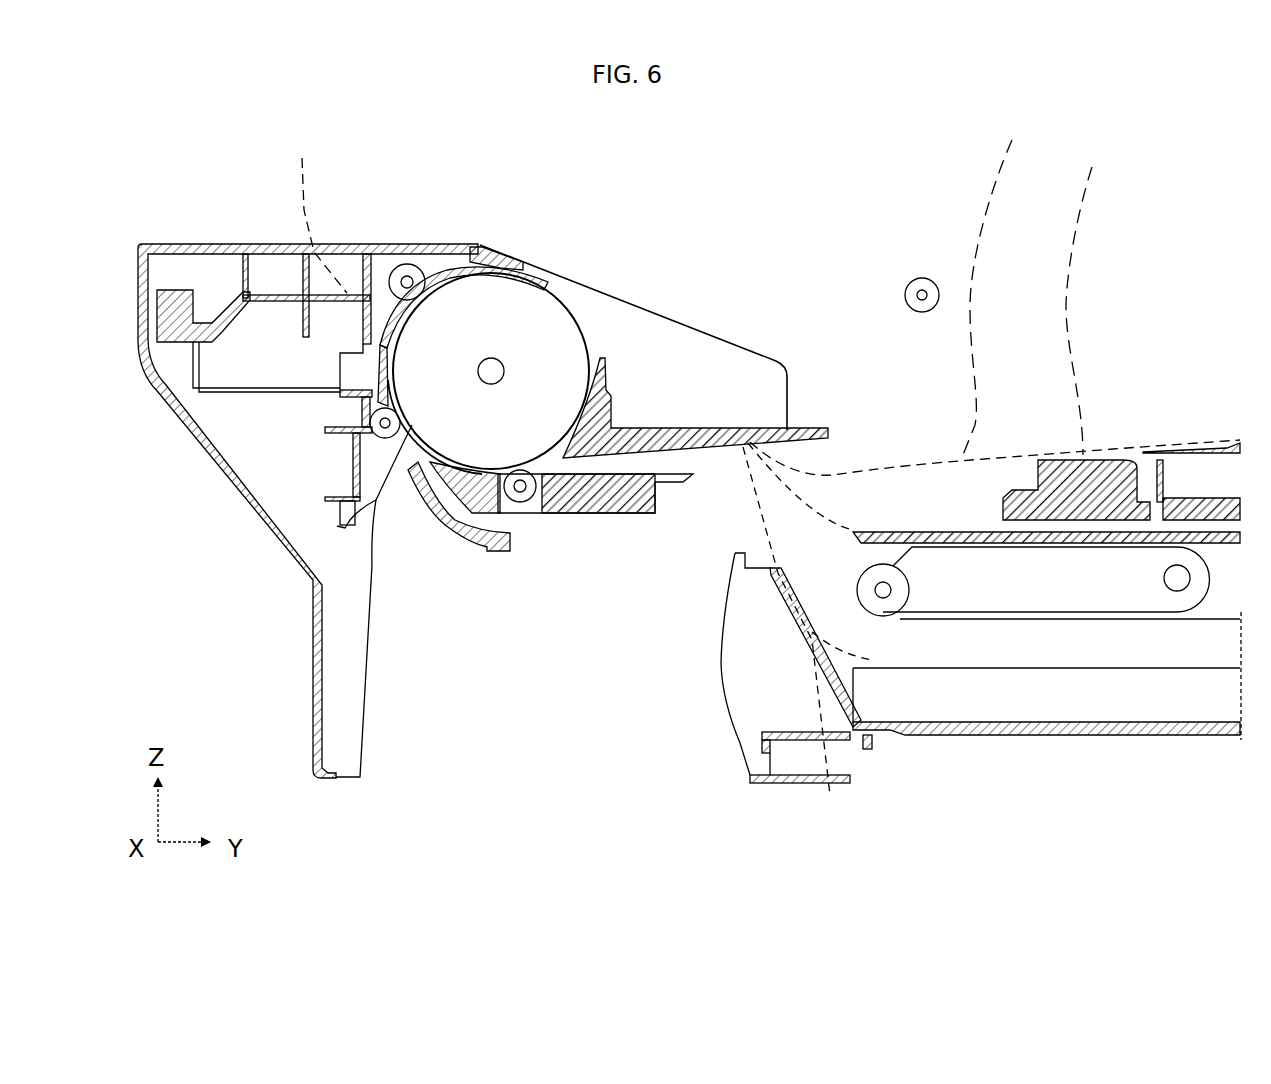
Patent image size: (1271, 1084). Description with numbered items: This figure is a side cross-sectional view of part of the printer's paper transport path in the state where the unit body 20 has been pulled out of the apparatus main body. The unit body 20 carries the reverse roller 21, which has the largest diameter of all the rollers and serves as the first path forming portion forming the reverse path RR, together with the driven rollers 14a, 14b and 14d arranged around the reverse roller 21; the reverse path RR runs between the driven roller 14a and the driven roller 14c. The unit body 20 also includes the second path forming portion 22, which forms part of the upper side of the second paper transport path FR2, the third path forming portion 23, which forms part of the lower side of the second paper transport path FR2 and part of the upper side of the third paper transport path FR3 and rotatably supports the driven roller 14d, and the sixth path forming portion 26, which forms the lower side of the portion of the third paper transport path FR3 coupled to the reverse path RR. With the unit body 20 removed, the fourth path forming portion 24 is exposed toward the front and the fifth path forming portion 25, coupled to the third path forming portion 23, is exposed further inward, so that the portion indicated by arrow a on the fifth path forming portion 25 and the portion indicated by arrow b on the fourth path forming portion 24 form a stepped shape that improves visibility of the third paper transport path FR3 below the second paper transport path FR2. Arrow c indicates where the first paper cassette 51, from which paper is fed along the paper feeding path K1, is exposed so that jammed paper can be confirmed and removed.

The unit body 20 is at (190, 240).
The reverse path RR is at (315, 210).
The driven roller 14b is at (394, 266).
The driven roller 14a is at (375, 437).
The driven roller 14d is at (513, 482).
The driven roller 14c is at (934, 283).
The reverse roller 21 is at (547, 290).
The second path forming portion 22 is at (688, 425).
The third path forming portion 23 is at (597, 513).
The sixth path forming portion 26 is at (440, 525).
The first paper cassette 51 is at (903, 735).
The fourth path forming portion 24 is at (1128, 540).
The fifth path forming portion 25 is at (1058, 485).
The second paper transport path FR2 is at (1006, 281).
The third paper transport path FR3 is at (1097, 296).
The arrow a is at (1056, 436).
The arrow b is at (918, 492).
The arrow c is at (810, 573).
The paper feeding path K1 is at (808, 646).